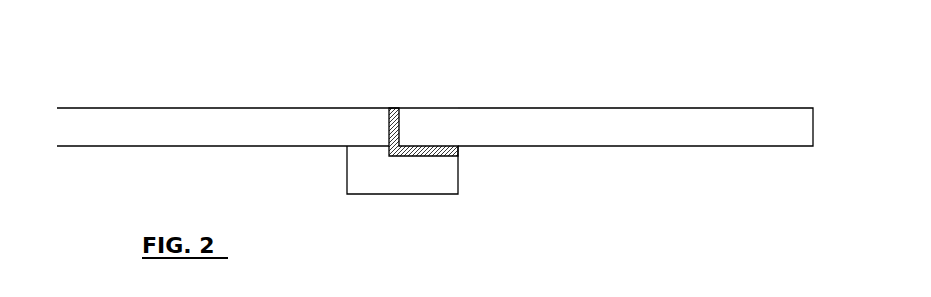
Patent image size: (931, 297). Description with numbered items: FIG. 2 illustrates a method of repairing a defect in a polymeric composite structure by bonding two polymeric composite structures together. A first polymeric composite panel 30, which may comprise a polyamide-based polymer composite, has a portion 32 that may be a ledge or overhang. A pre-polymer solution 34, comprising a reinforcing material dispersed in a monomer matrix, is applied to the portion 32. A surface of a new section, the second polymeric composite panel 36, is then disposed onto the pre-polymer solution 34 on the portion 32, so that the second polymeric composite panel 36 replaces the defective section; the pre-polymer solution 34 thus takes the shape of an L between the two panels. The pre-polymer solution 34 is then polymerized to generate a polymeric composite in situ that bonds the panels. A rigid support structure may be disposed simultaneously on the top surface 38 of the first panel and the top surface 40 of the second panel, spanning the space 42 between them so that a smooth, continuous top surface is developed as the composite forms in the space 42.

The first polymeric composite panel 30 is at (113, 110).
The portion 32 is at (458, 148).
The pre-polymer solution 34 is at (399, 124).
The second polymeric composite panel 36 is at (750, 116).
The top surface of the first polymeric composite panel 38 is at (254, 108).
The top surface of the second polymeric composite panel 40 is at (603, 110).
The space 42 is at (393, 108).